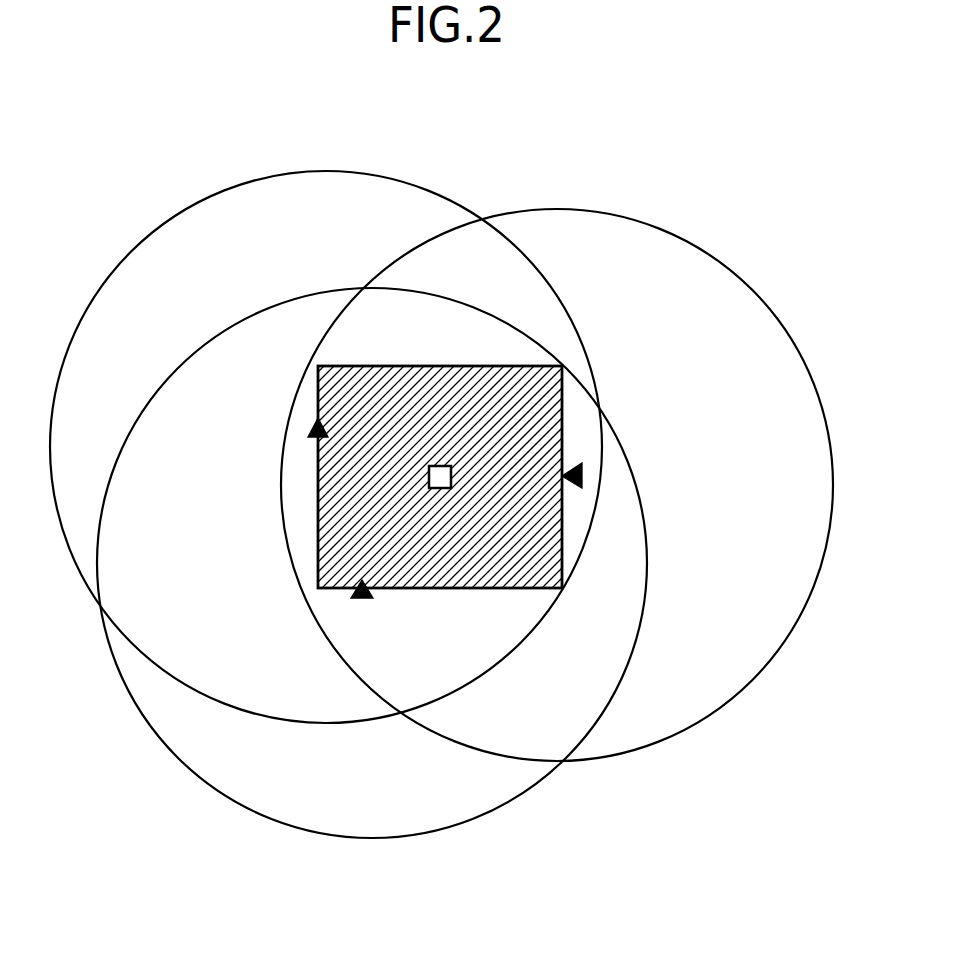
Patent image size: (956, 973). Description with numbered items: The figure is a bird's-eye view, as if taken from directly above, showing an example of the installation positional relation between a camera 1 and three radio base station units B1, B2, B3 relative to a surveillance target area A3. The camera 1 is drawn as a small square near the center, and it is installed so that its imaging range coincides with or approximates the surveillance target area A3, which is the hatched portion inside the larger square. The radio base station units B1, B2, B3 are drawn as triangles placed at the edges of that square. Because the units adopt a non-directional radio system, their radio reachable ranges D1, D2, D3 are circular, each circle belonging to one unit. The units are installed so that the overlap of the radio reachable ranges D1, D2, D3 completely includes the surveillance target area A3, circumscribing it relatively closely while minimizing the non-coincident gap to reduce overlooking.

The radio reachable range D2 is at (330, 172).
The radio reachable range D1 is at (560, 209).
The radio reachable range D3 is at (373, 838).
The surveillance target area A3 is at (425, 366).
The camera 1 is at (440, 488).
The radio base station unit B1 is at (582, 472).
The radio base station unit B2 is at (318, 438).
The radio base station unit B3 is at (363, 598).